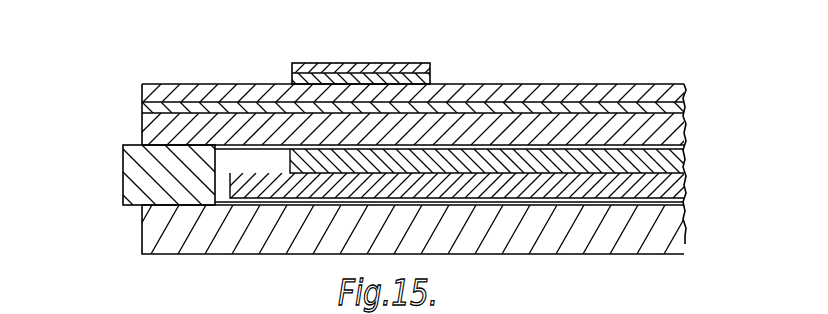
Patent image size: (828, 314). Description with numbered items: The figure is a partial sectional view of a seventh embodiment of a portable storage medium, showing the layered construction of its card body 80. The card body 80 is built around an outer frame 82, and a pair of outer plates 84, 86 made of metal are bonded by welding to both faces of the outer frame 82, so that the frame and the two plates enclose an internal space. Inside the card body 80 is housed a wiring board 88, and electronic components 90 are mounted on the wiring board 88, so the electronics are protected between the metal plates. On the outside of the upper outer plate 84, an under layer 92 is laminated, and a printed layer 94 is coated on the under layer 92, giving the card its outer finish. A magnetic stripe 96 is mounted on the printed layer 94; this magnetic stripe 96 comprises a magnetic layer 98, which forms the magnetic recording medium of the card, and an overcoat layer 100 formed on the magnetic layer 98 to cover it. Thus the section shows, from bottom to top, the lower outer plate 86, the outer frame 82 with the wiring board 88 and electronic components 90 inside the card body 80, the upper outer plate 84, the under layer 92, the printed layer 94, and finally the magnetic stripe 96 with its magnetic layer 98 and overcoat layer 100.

The card body 80 is at (652, 72).
The outer frame 82 is at (123, 181).
The outer plate 84 is at (142, 126).
The outer plate 86 is at (142, 233).
The wiring board 88 is at (660, 184).
The electronic components 90 is at (666, 165).
The under layer 92 is at (142, 108).
The printed layer 94 is at (142, 90).
The magnetic stripe 96 is at (361, 46).
The magnetic layer 98 is at (292, 78).
The overcoat layer 100 is at (292, 68).